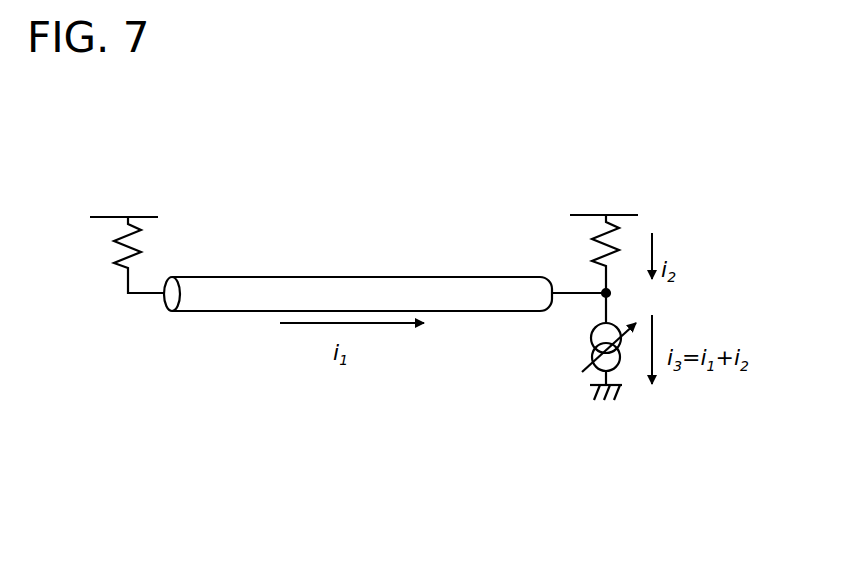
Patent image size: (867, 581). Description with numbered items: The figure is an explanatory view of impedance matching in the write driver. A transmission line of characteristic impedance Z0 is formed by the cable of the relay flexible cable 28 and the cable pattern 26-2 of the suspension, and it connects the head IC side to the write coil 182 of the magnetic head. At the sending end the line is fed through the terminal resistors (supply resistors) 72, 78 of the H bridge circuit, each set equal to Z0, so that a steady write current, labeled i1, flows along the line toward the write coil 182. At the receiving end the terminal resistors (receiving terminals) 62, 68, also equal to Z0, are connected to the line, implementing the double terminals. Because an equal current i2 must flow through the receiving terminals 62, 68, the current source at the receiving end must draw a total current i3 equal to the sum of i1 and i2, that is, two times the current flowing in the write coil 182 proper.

The terminal resistor (supply resistor) 72 is at (160, 232).
The terminal resistor (supply resistor) 78 is at (200, 226).
The terminal resistor (receiving terminal) 62 is at (627, 228).
The terminal resistor (receiving terminal) 68 is at (580, 224).
The relay flexible cable 28 is at (200, 303).
The cable pattern 26-2 is at (373, 340).
The write coil 182 is at (373, 340).